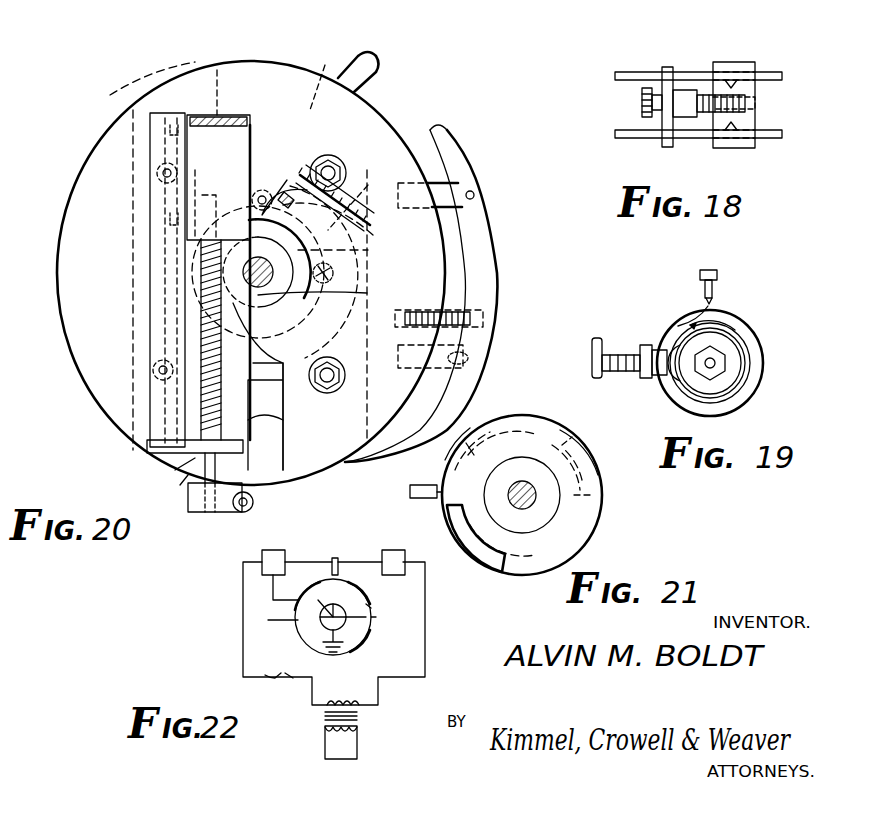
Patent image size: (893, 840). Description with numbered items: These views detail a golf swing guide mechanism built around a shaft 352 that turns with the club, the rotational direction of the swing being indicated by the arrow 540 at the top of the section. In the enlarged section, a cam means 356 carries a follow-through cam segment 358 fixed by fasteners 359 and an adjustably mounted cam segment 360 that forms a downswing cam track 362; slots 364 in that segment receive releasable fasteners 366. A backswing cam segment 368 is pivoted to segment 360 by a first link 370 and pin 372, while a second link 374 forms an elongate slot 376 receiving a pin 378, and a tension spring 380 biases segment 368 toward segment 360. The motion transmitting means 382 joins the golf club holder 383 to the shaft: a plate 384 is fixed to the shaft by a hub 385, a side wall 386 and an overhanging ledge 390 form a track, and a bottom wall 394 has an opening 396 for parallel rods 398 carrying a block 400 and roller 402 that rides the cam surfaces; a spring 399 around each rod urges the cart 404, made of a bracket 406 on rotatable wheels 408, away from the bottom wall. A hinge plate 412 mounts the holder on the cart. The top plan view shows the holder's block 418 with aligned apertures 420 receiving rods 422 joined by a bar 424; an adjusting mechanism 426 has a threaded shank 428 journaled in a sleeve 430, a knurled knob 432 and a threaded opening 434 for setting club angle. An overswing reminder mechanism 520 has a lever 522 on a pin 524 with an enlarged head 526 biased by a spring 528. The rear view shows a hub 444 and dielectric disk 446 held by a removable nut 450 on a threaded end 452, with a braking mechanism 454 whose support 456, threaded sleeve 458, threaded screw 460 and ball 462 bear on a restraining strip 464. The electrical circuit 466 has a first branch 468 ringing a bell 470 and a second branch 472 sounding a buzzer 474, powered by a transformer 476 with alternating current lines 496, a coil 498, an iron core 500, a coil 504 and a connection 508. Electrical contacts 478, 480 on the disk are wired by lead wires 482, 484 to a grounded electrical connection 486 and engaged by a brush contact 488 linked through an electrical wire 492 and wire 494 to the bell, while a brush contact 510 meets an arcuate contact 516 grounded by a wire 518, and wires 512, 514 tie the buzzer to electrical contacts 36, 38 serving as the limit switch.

In FIG. 22, the electrical contact 36 is at (270, 674).
In FIG. 22, the electrical contact 38 is at (288, 673).
In FIG. 20, the shaft 352 is at (294, 272).
In FIG. 21, the shaft 352 is at (522, 483).
In FIG. 20, the cam means 356 is at (143, 87).
In FIG. 20, the follow-through cam segment 358 is at (100, 134).
In FIG. 20, the fasteners 359 is at (160, 176).
In FIG. 20, the adjustably mounted cam segment 360 is at (416, 239).
In FIG. 20, the downswing cam track 362 is at (385, 117).
In FIG. 20, the slots 364 is at (300, 412).
In FIG. 20, the releasable fasteners 366 is at (336, 155).
In FIG. 20, the backswing cam segment 368 is at (485, 232).
In FIG. 20, the first link 370 is at (436, 164).
In FIG. 20, the pin 372 is at (472, 191).
In FIG. 20, the second link 374 is at (420, 380).
In FIG. 20, the elongate slot 376 is at (470, 360).
In FIG. 20, the pin 378 is at (460, 355).
In FIG. 20, the tension spring 380 is at (420, 308).
In FIG. 20, the motion transmitting means 382 is at (148, 279).
In FIG. 18, the golf club holder 383 is at (700, 66).
In FIG. 20, the plate 384 is at (240, 385).
In FIG. 20, the hub 385 is at (347, 305).
In FIG. 20, the side wall 386 is at (150, 246).
In FIG. 20, the overhanging ledge 390 is at (144, 295).
In FIG. 20, the bottom wall 394 is at (148, 444).
In FIG. 20, the opening 396 is at (179, 468).
In FIG. 20, the parallel rods 398 is at (218, 478).
In FIG. 20, the spring 399 is at (265, 425).
In FIG. 20, the block 400 is at (200, 512).
In FIG. 20, the roller 402 is at (251, 512).
In FIG. 20, the cart 404 is at (252, 135).
In FIG. 20, the block or bracket 406 is at (228, 151).
In FIG. 20, the rotatable wheels 408 is at (175, 125).
In FIG. 20, the hinge plate 412 is at (232, 92).
In FIG. 18, the block 418 is at (728, 60).
In FIG. 18, the aligned apertures 420 is at (746, 73).
In FIG. 18, the rods 422 is at (620, 72).
In FIG. 18, the bar 424 is at (667, 67).
In FIG. 18, the adjusting mechanism 426 is at (726, 140).
In FIG. 18, the threaded shank 428 is at (690, 92).
In FIG. 18, the sleeve 430 is at (680, 140).
In FIG. 18, the knurled knob 432 is at (642, 105).
In FIG. 18, the threaded opening 434 is at (760, 104).
In FIG. 19, the hub 444 is at (744, 323).
In FIG. 21, the hub 444 is at (600, 501).
In FIG. 19, the dielectric disk 446 is at (720, 303).
In FIG. 21, the dielectric disk 446 is at (523, 413).
In FIG. 22, the dielectric disk 446 is at (338, 655).
In FIG. 19, the removable nut 450 is at (735, 354).
In FIG. 19, the threaded end 452 is at (735, 352).
In FIG. 19, the braking mechanism 454 is at (612, 338).
In FIG. 19, the support 456 is at (646, 343).
In FIG. 19, the threaded sleeve 458 is at (622, 355).
In FIG. 19, the threaded screw 460 is at (597, 378).
In FIG. 19, the ball 462 is at (658, 382).
In FIG. 19, the restraining strip 464 is at (675, 315).
In FIG. 22, the electrical circuit 466 is at (355, 560).
In FIG. 22, the first branch 468 is at (428, 612).
In FIG. 22, the bell 470 is at (396, 543).
In FIG. 22, the second branch 472 is at (240, 602).
In FIG. 22, the buzzer 474 is at (273, 566).
In FIG. 22, the transformer 476 is at (322, 716).
In FIG. 21, the electrical contact 478 is at (478, 424).
In FIG. 22, the electrical contact 478 is at (364, 583).
In FIG. 21, the electrical contact 480 is at (575, 424).
In FIG. 22, the electrical contact 480 is at (366, 646).
In FIG. 21, the lead wire 482 is at (500, 437).
In FIG. 22, the lead wire 482 is at (368, 610).
In FIG. 21, the lead wire 484 is at (579, 466).
In FIG. 22, the lead wire 484 is at (387, 619).
In FIG. 22, the grounded electrical connection 486 is at (321, 636).
In FIG. 21, the brush contact 488 is at (425, 484).
In FIG. 22, the brush contact 488 is at (328, 558).
In FIG. 22, the electrical wire 492 is at (337, 558).
In FIG. 22, the wire 494 is at (426, 639).
In FIG. 22, the alternating current carrying lines 496 is at (358, 742).
In FIG. 19, the coil 498 is at (703, 274).
In FIG. 22, the coil 498 is at (341, 742).
In FIG. 22, the iron core 500 is at (360, 718).
In FIG. 22, the coil 504 is at (349, 703).
In FIG. 22, the connection 508 is at (308, 689).
In FIG. 22, the brush contact 510 is at (298, 620).
In FIG. 22, the wire 512 is at (270, 603).
In FIG. 22, the wire 514 is at (243, 641).
In FIG. 21, the arcuate contact 516 is at (453, 514).
In FIG. 22, the arcuate contact 516 is at (300, 583).
In FIG. 21, the wire 518 is at (500, 518).
In FIG. 22, the wire 518 is at (337, 605).
In FIG. 20, the overswing reminder mechanism 520 is at (378, 52).
In FIG. 20, the lever 522 is at (328, 63).
In FIG. 20, the pin 524 is at (252, 196).
In FIG. 20, the enlarged head 526 is at (384, 61).
In FIG. 20, the spring 528 is at (364, 195).
In FIG. 20, the direction arrow 540 is at (322, 48).